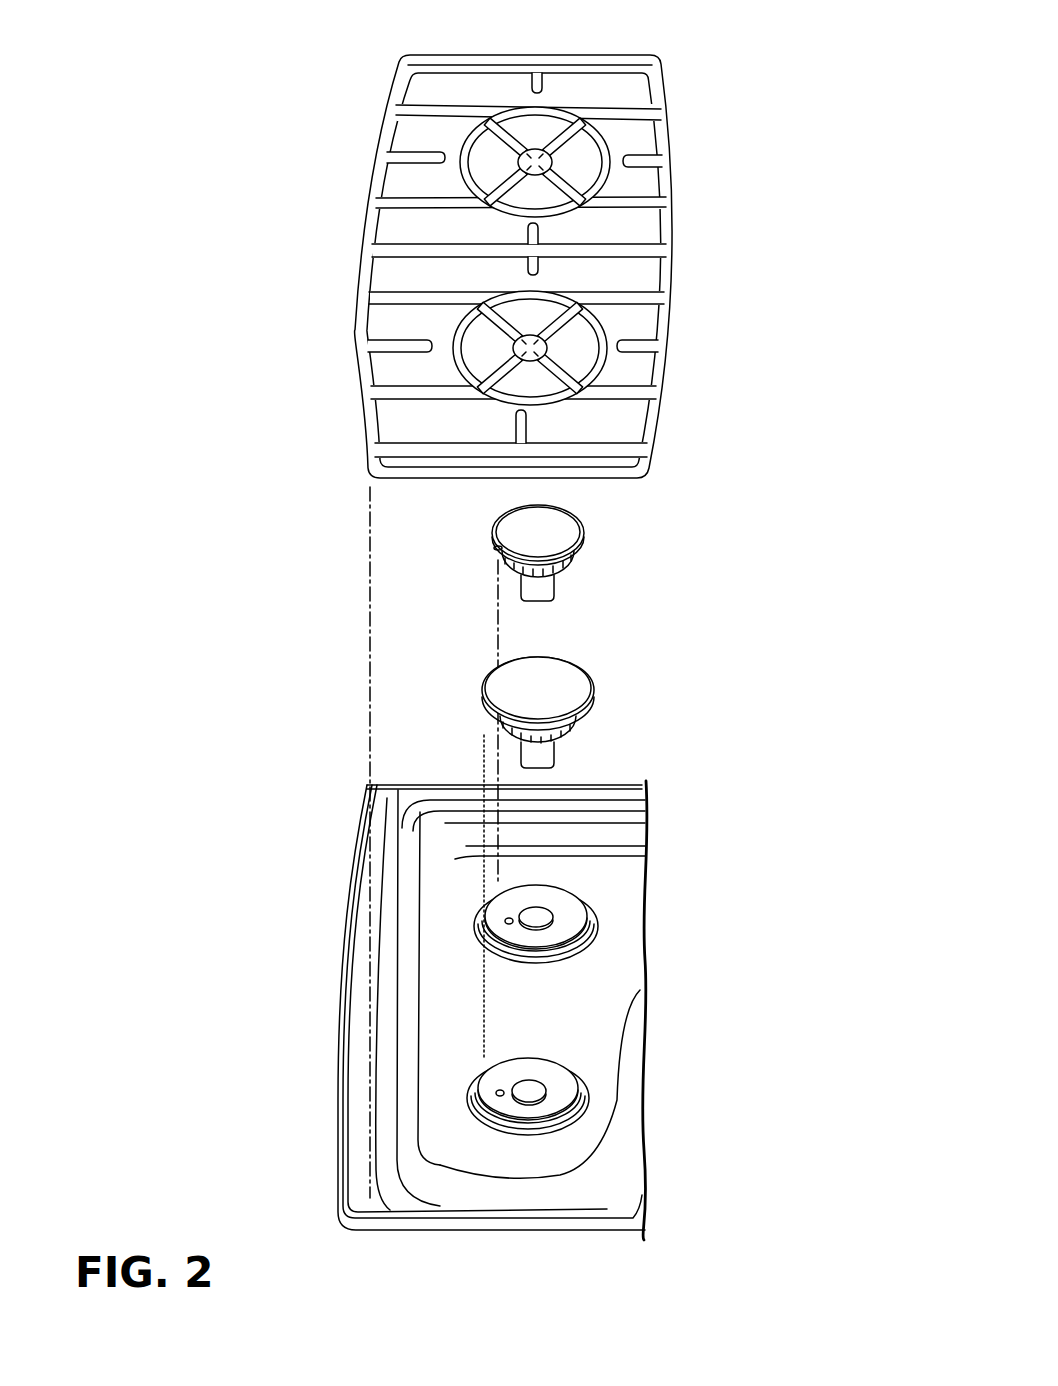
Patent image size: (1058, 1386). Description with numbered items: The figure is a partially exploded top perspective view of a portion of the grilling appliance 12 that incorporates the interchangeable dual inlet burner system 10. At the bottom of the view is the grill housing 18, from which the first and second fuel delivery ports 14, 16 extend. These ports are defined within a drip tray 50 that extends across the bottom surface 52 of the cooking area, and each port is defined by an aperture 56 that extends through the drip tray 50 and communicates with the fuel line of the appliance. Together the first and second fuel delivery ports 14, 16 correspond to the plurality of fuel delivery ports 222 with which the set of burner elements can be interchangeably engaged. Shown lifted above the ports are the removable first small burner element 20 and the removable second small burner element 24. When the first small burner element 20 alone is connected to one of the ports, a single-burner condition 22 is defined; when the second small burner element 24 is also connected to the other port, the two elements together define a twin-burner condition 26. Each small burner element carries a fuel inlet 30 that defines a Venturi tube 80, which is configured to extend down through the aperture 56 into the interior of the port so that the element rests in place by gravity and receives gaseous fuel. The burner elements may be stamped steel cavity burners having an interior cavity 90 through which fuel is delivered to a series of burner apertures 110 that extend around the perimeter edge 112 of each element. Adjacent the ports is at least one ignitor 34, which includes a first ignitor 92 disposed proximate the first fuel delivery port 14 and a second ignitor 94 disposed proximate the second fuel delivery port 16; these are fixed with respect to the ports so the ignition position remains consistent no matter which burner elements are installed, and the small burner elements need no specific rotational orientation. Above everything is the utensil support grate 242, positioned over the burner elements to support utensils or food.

The interchangeable dual inlet burner system 10 is at (248, 531).
The grilling appliance 12 is at (766, 416).
The first fuel delivery port 14 is at (600, 950).
The second fuel delivery port 16 is at (602, 1074).
The grill housing 18 is at (340, 1082).
The first small burner element 20 is at (560, 530).
The single-burner condition 22 is at (597, 542).
The second small burner element 24 is at (568, 685).
The twin-burner condition 26 is at (440, 517).
The fuel inlet 30 is at (540, 586).
The ignitor 34 is at (503, 909).
The drip tray 50 is at (445, 967).
The bottom surface 52 is at (546, 1011).
The aperture 56 is at (590, 903).
The Venturi tube 80 is at (542, 758).
The interior cavity 90 is at (522, 533).
The first ignitor 92 is at (504, 919).
The second ignitor 94 is at (497, 1090).
The burner apertures 110 is at (510, 742).
The perimeter edge 112 is at (590, 713).
The plurality of fuel delivery ports 222 is at (698, 885).
The utensil support grate 242 is at (648, 90).